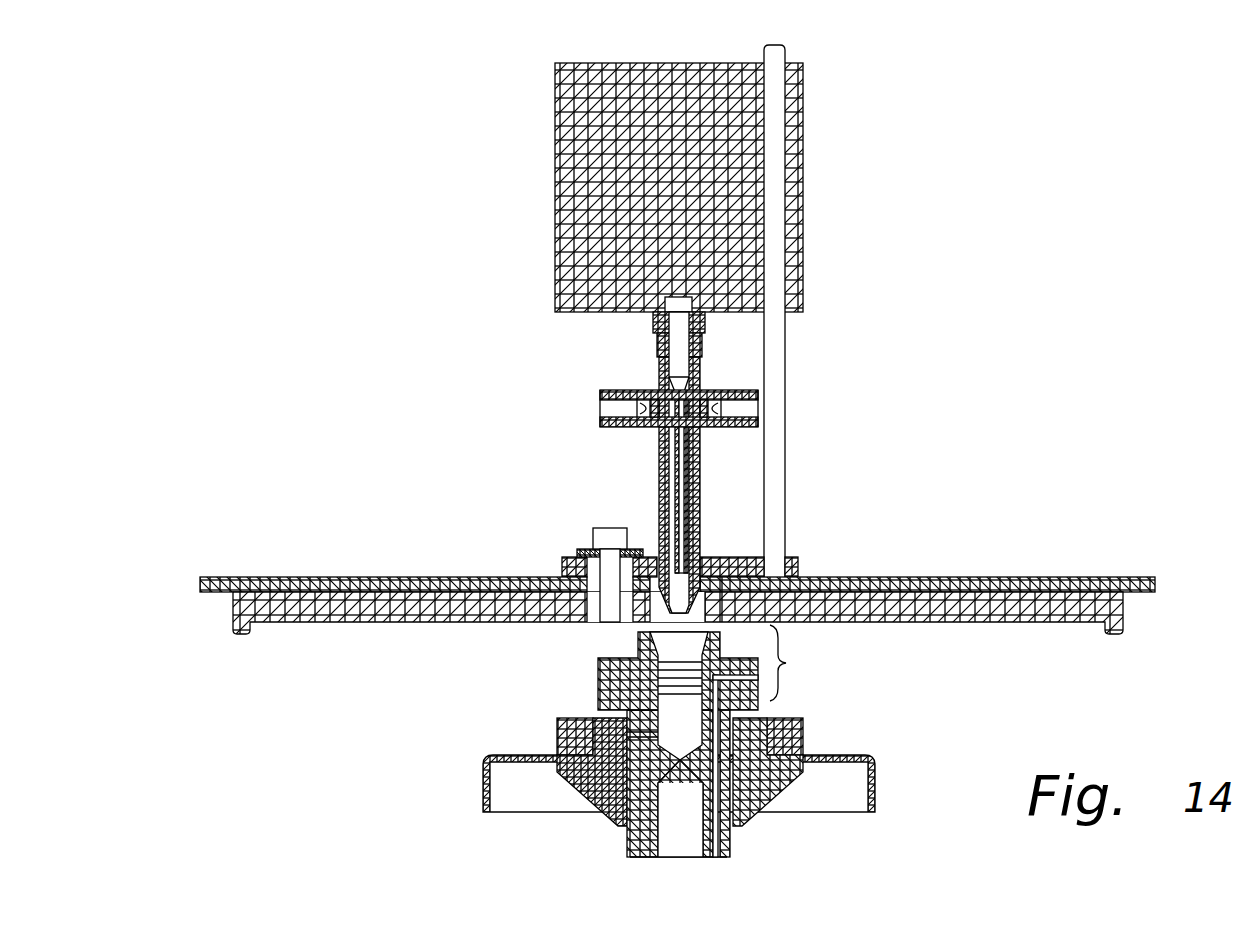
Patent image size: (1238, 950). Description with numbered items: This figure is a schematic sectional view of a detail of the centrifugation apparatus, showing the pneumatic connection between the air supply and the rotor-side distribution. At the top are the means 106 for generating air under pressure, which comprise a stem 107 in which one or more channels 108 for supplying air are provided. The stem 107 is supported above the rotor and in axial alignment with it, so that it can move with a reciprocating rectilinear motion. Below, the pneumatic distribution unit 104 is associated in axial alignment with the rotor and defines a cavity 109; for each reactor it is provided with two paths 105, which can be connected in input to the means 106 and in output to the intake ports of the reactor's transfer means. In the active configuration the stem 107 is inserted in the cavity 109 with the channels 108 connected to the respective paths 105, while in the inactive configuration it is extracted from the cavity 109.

The pneumatic distribution unit 104 is at (583, 797).
The paths 105 is at (578, 772).
The means for generating air under pressure 106 is at (470, 219).
The stem 107 is at (659, 500).
The channels 108 is at (656, 449).
The cavity 109 is at (668, 712).